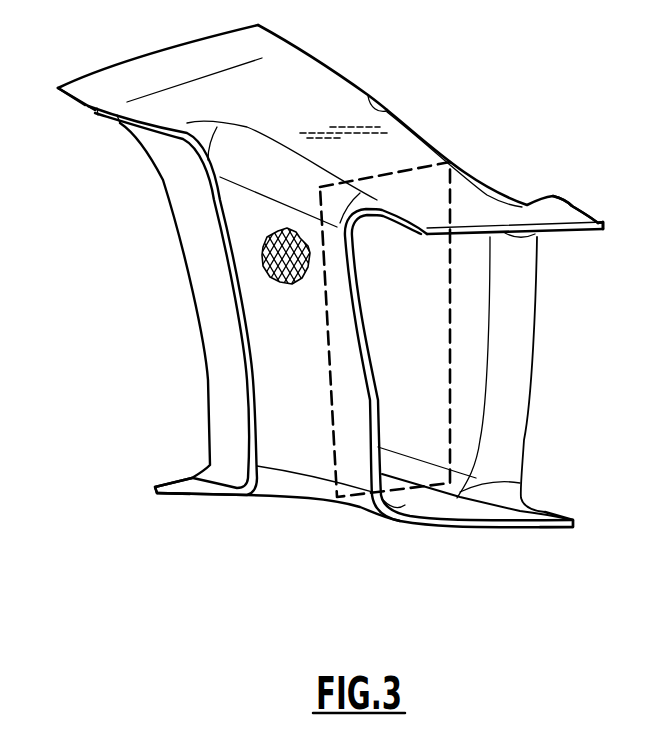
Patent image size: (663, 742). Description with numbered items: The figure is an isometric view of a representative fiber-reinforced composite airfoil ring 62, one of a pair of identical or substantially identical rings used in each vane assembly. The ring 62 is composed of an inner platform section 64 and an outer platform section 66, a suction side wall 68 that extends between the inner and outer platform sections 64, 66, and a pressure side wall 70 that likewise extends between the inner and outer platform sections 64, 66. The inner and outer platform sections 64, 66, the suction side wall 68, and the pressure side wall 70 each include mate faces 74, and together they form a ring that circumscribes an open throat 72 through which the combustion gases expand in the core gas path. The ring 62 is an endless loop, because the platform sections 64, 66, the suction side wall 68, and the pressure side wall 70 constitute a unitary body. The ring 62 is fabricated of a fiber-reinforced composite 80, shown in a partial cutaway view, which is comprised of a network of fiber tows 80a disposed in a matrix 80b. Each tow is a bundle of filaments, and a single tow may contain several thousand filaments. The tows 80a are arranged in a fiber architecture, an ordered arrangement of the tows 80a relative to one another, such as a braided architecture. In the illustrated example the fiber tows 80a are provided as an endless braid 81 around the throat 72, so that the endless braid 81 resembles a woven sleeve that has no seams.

The fiber-reinforced composite airfoil ring 62 is at (161, 512).
The inner platform section 64 is at (450, 515).
The outer platform section 66 is at (443, 190).
The suction side wall 68 is at (322, 430).
The pressure side wall 70 is at (477, 338).
The open throat 72 is at (410, 299).
The mate faces 74 is at (87, 107).
The fiber-reinforced composite 80 is at (240, 296).
The fiber tows 80a is at (262, 254).
The matrix 80b is at (286, 287).
The endless braid 81 is at (452, 218).